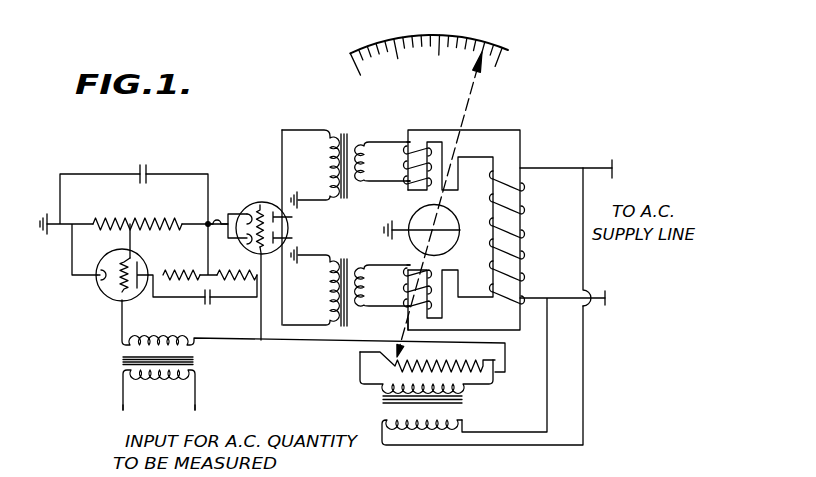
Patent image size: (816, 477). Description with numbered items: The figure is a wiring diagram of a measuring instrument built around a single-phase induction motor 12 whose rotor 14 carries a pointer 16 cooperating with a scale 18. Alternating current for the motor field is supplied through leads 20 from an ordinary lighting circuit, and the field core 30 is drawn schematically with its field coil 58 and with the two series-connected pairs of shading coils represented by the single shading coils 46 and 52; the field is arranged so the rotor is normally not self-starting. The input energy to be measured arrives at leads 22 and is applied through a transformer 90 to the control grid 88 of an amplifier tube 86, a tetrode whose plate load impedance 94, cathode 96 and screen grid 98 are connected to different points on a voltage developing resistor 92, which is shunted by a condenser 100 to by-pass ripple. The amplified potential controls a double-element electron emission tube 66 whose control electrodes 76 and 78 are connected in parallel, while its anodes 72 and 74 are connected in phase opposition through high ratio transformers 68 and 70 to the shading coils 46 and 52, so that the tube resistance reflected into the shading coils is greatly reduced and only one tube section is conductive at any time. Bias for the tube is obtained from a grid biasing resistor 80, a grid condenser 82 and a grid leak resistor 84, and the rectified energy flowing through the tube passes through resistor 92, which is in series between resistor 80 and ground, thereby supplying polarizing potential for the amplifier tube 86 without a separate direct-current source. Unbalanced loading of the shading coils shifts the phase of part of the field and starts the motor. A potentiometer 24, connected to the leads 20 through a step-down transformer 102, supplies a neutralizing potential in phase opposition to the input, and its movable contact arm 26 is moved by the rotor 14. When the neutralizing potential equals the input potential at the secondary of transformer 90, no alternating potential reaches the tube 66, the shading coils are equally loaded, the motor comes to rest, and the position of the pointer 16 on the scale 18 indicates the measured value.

The induction motor 12 is at (472, 190).
The rotor 14 is at (460, 231).
The pointer 16 is at (472, 98).
The scale 18 is at (429, 54).
The leads 20 is at (606, 298).
The leads 22 is at (200, 412).
The potentiometer 24 is at (395, 366).
The movable contact arm 26 is at (410, 326).
The field core 30 is at (566, 152).
The shading coil 46 is at (415, 141).
The shading coil 52 is at (428, 303).
The motor field coil 58 is at (523, 186).
The electron emission tube 66 is at (260, 197).
The high ratio transformer 68 is at (342, 133).
The high ratio transformer 70 is at (333, 328).
The anode 72 is at (293, 218).
The anode 74 is at (293, 238).
The control electrode 76 is at (259, 222).
The control electrode 78 is at (263, 243).
The grid biasing resistor 80 is at (218, 221).
The grid condenser 82 is at (211, 297).
The grid leak resistor 84 is at (247, 280).
The amplifier tube 86 is at (111, 300).
The control electrode 88 is at (119, 265).
The transformer 90 is at (195, 362).
The voltage developing resistor 92 is at (152, 220).
The plate resistance 94 is at (177, 281).
The cathode 96 is at (78, 276).
The screen grid 98 is at (123, 292).
The condenser 100 is at (142, 172).
The step-down transformer 102 is at (462, 406).